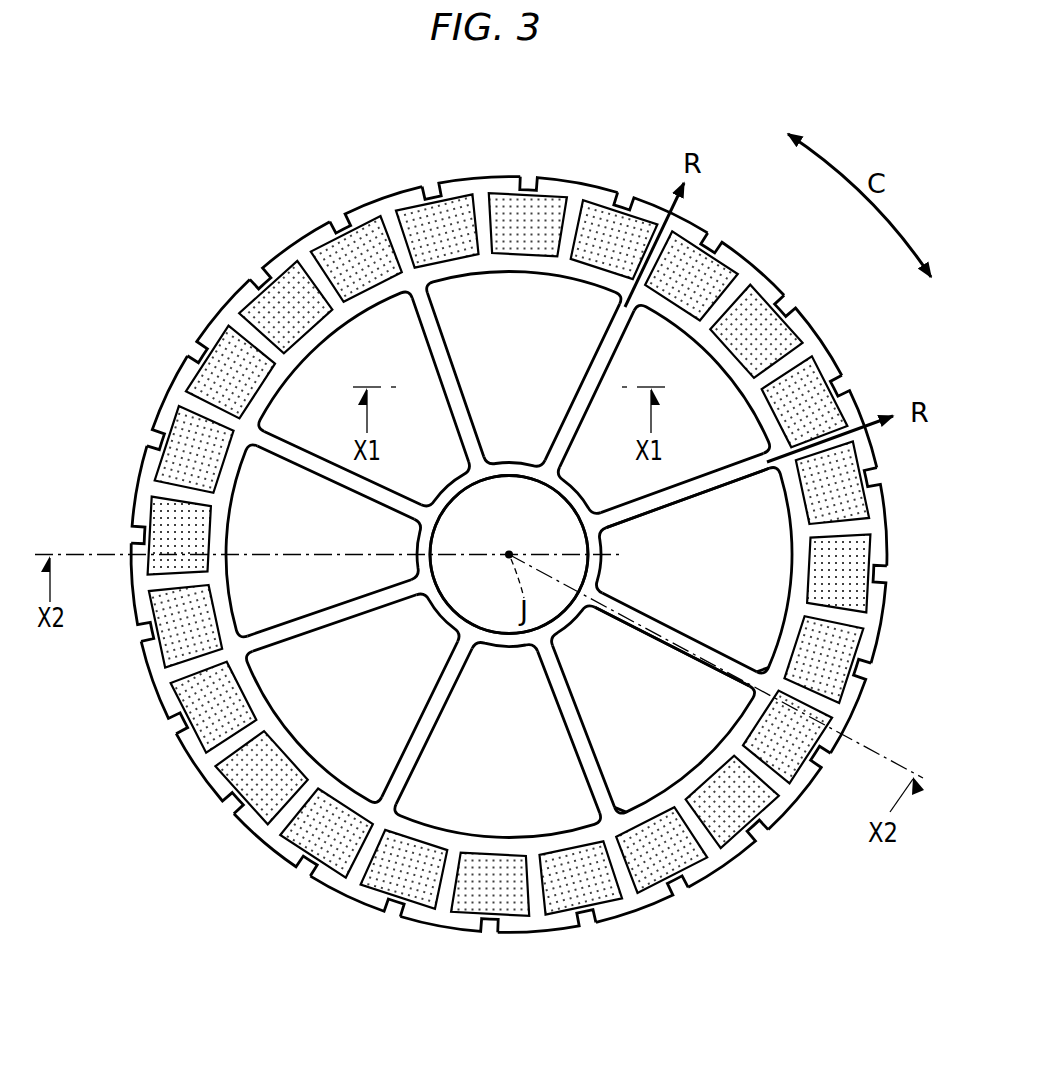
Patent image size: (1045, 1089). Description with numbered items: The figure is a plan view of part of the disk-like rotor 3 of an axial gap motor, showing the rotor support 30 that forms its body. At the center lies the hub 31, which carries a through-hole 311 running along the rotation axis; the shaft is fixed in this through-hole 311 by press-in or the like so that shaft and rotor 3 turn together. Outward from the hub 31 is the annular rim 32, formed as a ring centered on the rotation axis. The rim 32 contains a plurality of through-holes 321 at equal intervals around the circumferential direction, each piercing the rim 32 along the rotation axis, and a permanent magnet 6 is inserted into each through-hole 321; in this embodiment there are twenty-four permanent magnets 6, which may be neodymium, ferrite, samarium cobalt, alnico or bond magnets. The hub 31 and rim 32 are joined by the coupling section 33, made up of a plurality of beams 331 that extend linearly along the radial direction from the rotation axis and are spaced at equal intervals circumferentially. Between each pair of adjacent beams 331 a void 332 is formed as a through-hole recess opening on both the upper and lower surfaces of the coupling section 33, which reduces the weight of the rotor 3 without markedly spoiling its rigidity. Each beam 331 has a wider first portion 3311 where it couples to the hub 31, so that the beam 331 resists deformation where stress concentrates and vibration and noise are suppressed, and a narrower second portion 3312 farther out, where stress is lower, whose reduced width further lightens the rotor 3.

The rotor 3 is at (724, 168).
The rotor support 30 is at (584, 176).
The permanent magnets 6 is at (760, 326).
The rim 32 is at (208, 702).
The through-holes 321 is at (757, 295).
The coupling section 33 is at (424, 611).
The beams 331 is at (433, 328).
The first portion 3311 is at (541, 645).
The second portion 3312 is at (573, 734).
The void 332 is at (729, 580).
The hub 31 is at (448, 608).
The through-hole 311 is at (532, 526).